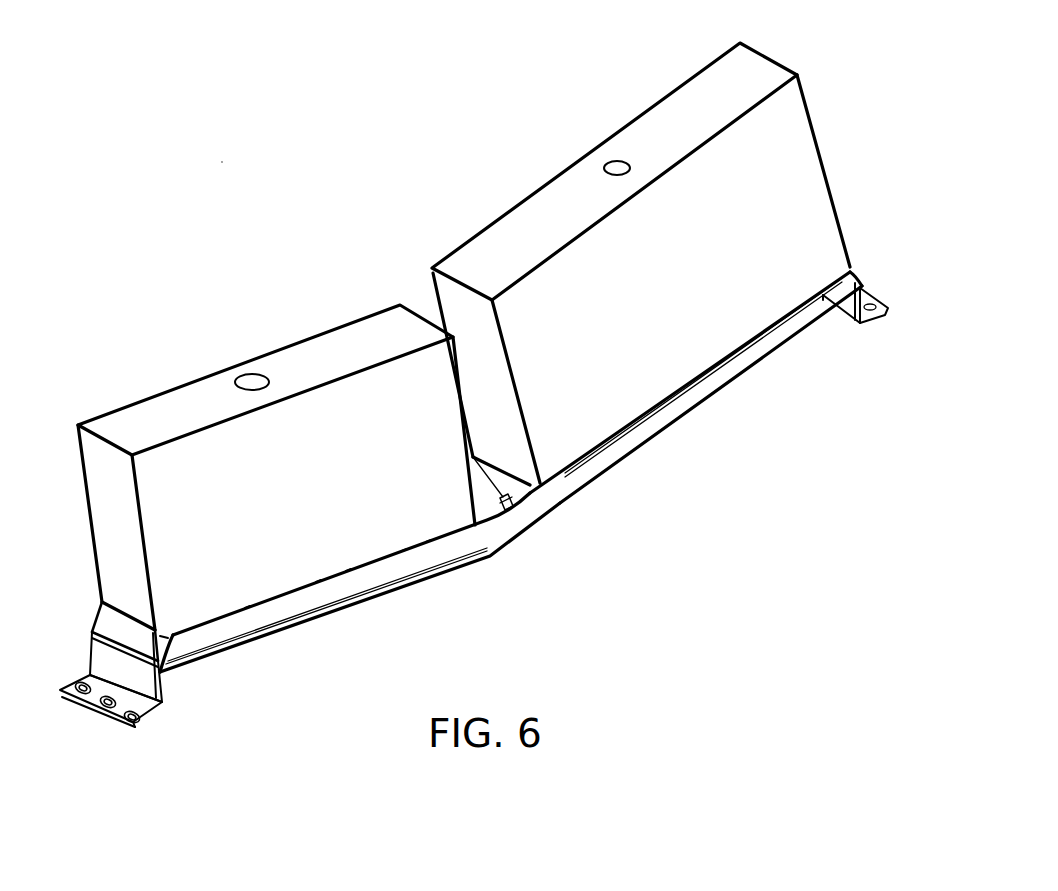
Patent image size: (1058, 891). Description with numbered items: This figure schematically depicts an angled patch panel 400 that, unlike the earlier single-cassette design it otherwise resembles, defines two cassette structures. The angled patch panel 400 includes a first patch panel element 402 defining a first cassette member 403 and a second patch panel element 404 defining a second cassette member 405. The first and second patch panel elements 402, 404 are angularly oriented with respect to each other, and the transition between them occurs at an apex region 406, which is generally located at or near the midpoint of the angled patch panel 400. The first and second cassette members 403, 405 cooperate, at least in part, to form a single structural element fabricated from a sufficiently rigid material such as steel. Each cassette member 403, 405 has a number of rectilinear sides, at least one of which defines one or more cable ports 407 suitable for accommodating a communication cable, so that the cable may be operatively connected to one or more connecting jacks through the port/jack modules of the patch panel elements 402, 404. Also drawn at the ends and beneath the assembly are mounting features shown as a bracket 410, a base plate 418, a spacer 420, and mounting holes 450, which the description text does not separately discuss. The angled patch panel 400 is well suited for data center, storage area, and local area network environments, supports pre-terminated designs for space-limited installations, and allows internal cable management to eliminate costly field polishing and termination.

The angled patch panel 400 is at (283, 214).
The first patch panel element 402 is at (627, 438).
The first cassette member 403 is at (638, 152).
The second patch panel element 404 is at (270, 613).
The second cassette member 405 is at (290, 365).
The apex region 406 is at (508, 527).
The cable port 407 is at (250, 380).
The mounting bracket 410 is at (95, 657).
The base plate 418 is at (165, 709).
The spacer pad 420 is at (108, 617).
The mounting holes 450 is at (130, 720).